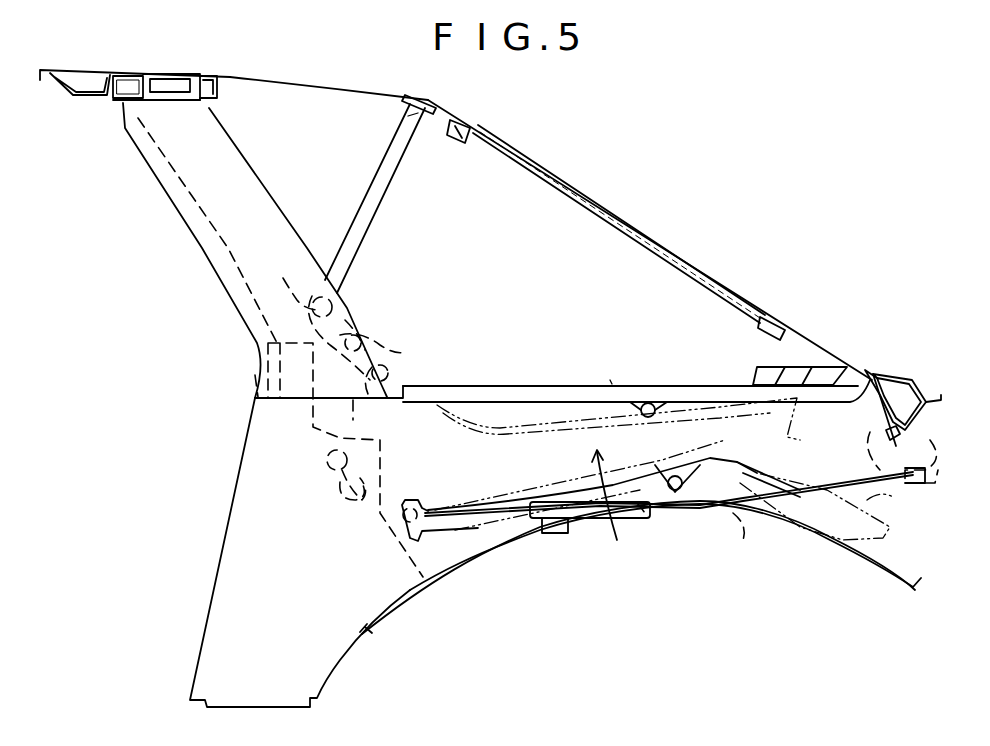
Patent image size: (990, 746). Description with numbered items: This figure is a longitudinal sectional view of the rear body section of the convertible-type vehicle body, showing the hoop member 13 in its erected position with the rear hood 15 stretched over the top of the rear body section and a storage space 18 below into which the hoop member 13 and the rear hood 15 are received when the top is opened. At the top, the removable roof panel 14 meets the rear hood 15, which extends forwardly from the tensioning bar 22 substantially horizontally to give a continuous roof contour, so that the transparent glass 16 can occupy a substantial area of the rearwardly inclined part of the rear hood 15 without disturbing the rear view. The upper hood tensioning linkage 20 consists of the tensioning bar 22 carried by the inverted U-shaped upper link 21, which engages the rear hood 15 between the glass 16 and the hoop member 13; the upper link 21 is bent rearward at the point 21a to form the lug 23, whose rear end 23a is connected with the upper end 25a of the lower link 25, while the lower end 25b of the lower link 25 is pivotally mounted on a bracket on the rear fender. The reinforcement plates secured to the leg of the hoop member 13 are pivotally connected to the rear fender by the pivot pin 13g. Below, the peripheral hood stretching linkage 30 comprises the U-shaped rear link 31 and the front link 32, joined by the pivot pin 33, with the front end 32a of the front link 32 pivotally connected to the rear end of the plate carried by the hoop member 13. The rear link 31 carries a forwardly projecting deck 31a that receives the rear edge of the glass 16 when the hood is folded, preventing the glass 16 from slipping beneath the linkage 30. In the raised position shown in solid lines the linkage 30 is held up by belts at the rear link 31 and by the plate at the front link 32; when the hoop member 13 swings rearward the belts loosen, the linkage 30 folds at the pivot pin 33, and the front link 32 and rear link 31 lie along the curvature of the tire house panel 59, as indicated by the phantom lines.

The hoop member 13 is at (277, 220).
The pivot pin 13g is at (323, 470).
The roof panel 14 is at (80, 69).
The rear hood 15 is at (348, 85).
The transparent glass 16 is at (587, 197).
The storage space 18 is at (612, 508).
The upper hood tensioning linkage 20 is at (362, 170).
The upper link 21 is at (385, 188).
The bent point 21a is at (286, 280).
The tensioning bar 22 is at (440, 100).
The lug 23 is at (350, 307).
The rear end of lug 23a is at (360, 327).
The lower link 25 is at (405, 352).
The upper end of lower link 25a is at (367, 350).
The lower end of lower link 25b is at (340, 495).
The peripheral hood stretching linkage 30 is at (607, 370).
The rear link 31 is at (717, 378).
The deck 31a is at (773, 366).
The front link 32 is at (540, 385).
The front end of front link 32a is at (398, 370).
The pivot pin 33 is at (648, 397).
The tire house panel 59 is at (470, 560).